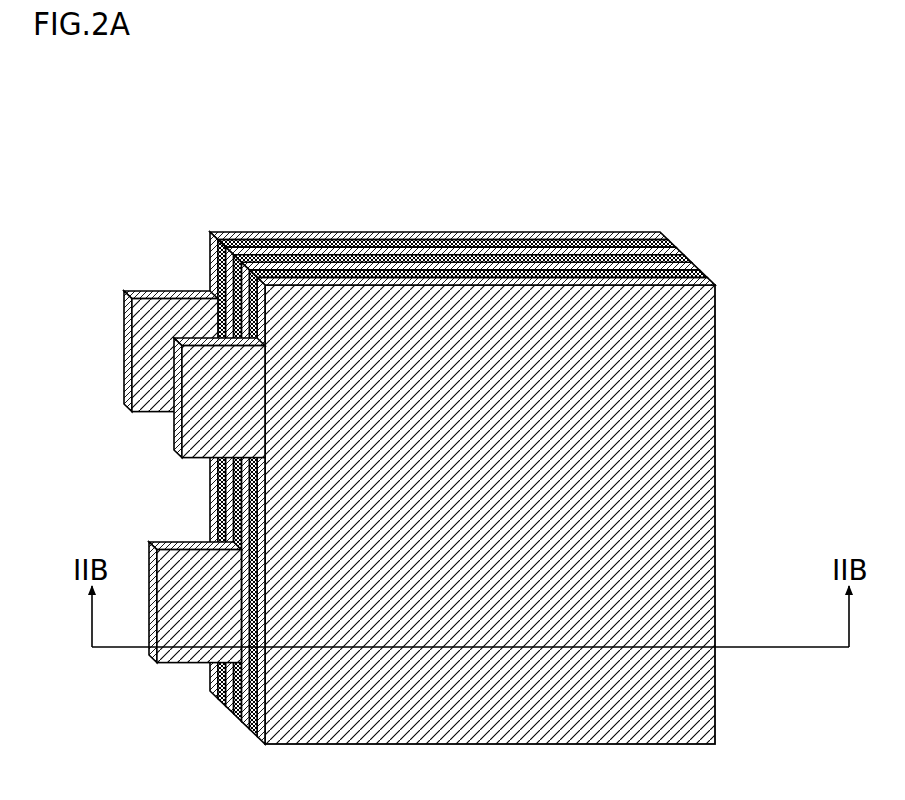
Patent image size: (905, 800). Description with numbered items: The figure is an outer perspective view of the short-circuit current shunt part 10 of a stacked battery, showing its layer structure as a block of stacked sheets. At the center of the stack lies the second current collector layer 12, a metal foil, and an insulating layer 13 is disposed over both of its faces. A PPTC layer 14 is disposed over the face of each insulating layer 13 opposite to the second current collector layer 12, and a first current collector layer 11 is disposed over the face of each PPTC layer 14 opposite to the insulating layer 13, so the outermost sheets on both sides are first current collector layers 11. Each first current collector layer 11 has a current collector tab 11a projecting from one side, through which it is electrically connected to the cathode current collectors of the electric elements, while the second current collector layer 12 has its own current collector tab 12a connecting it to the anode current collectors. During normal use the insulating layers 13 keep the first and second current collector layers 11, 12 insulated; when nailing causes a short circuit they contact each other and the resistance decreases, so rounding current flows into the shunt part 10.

The short-circuit current shunt part 10 is at (470, 149).
The first current collector layer 11 is at (664, 236).
The second current collector layer 12 is at (688, 258).
The insulating layer 13 is at (680, 251).
The PPTC layer 14 is at (672, 243).
The current collector tab 11a is at (121, 287).
The current collector tab 12a is at (142, 659).